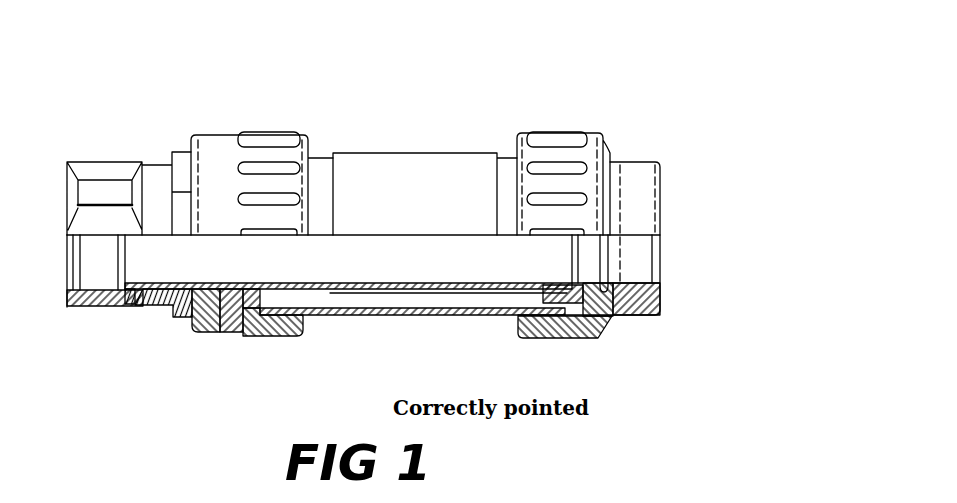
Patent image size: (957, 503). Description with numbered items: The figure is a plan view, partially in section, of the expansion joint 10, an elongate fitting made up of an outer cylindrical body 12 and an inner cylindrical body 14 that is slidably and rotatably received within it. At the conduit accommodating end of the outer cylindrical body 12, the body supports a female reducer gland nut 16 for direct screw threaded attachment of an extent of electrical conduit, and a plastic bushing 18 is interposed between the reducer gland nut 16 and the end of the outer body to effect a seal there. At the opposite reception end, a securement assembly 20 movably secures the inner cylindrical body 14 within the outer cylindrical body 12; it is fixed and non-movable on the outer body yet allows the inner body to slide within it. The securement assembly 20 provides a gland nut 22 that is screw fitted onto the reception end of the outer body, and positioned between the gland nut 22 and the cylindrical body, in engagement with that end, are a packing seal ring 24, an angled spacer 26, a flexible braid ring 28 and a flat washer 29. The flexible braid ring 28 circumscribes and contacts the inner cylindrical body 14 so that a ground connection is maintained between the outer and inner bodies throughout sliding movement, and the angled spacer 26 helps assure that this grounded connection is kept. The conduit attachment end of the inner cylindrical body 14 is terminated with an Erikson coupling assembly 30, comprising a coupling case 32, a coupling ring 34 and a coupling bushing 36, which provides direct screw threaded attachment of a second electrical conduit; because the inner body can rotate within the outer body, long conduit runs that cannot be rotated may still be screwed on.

The expansion joint 10 is at (616, 70).
The outer cylindrical body 12 is at (405, 180).
The inner cylindrical body 14 is at (427, 298).
The female reducer gland nut 16 is at (662, 292).
The plastic bushing 18 is at (603, 338).
The securement assembly 20 is at (260, 140).
The gland nut 22 is at (303, 337).
The packing seal ring 24 is at (195, 333).
The angled spacer 26 is at (213, 337).
The flexible braid ring 28 is at (247, 342).
The flat washer 29 is at (263, 343).
The Erikson coupling assembly 30 is at (117, 163).
The coupling case 32 is at (67, 307).
The coupling ring 34 is at (97, 307).
The coupling bushing 36 is at (168, 310).